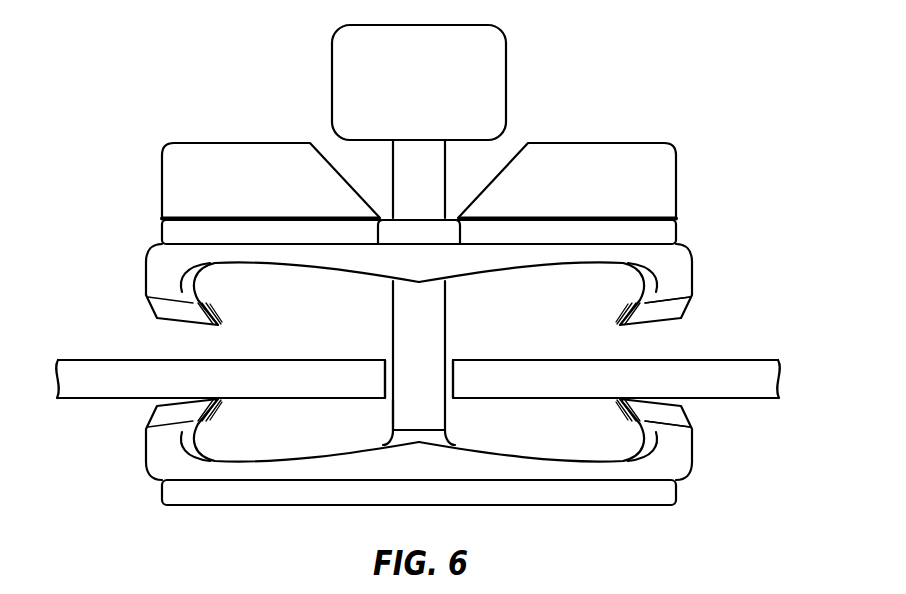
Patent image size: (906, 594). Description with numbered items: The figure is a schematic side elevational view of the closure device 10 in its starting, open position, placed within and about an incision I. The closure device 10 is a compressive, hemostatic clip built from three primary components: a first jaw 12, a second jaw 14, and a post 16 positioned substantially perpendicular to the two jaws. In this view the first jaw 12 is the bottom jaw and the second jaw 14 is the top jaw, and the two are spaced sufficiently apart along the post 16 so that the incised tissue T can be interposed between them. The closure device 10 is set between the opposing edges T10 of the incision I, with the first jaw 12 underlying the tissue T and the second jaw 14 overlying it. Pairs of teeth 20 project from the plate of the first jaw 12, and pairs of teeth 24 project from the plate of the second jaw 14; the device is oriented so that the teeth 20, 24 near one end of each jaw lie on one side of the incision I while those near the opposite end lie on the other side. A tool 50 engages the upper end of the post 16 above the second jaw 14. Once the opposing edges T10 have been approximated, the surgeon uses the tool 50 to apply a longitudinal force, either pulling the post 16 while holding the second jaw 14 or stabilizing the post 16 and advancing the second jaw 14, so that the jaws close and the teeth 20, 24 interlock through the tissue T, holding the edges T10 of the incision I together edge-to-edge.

The tool 50 is at (506, 68).
The closure device 10 is at (703, 260).
The post 16 is at (447, 303).
The second jaw 14 is at (146, 262).
The teeth 24 is at (688, 307).
The first jaw 12 is at (146, 463).
The teeth 20 is at (688, 414).
The tissue T is at (103, 357).
The opposing edges T10 is at (384, 372).
The incision I is at (391, 400).